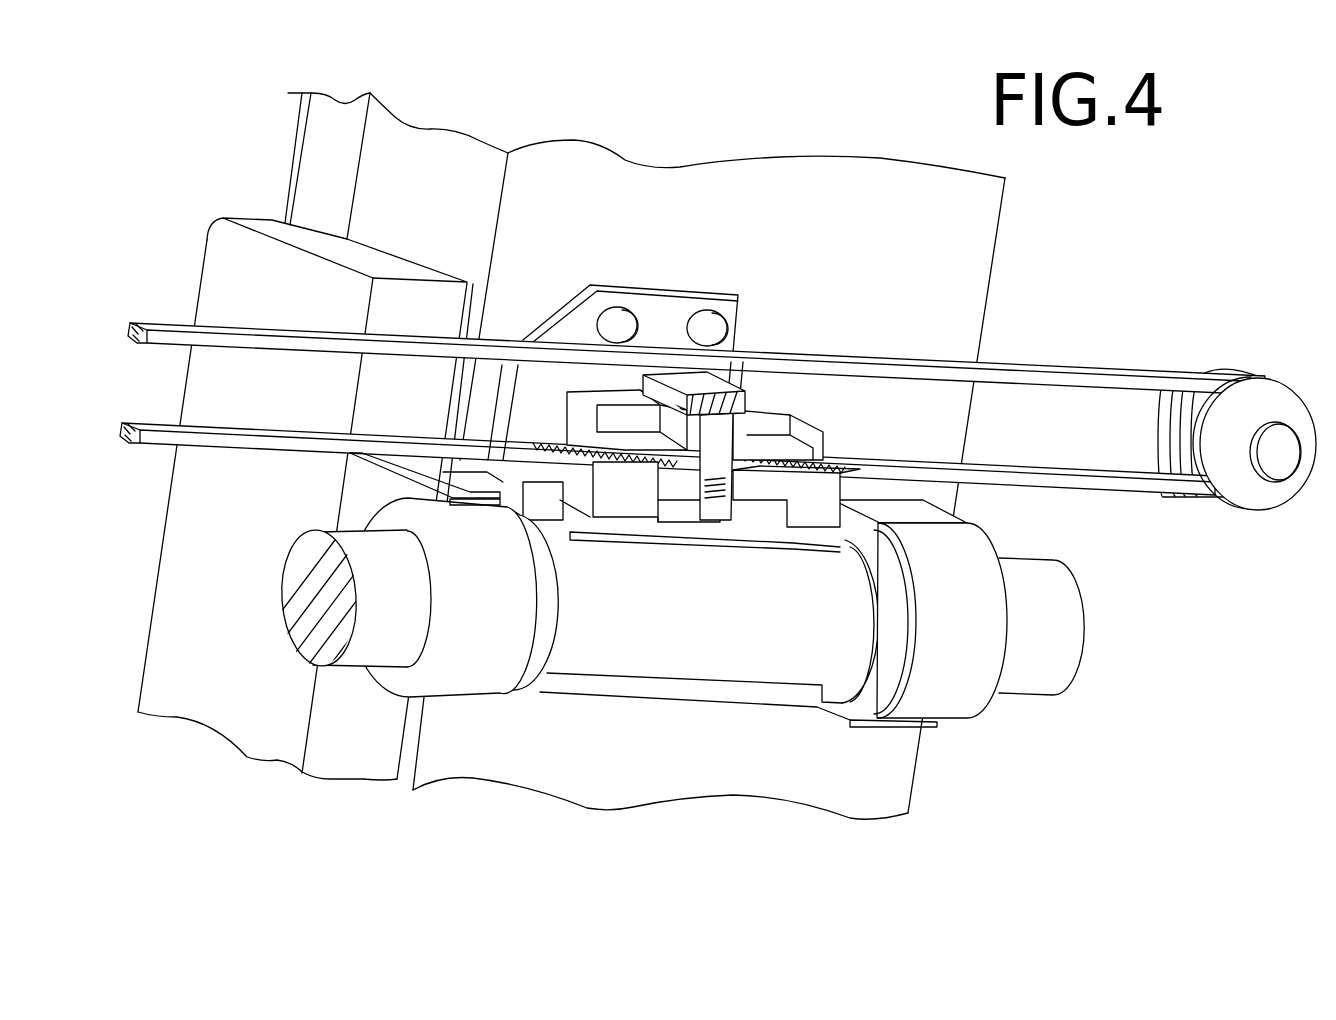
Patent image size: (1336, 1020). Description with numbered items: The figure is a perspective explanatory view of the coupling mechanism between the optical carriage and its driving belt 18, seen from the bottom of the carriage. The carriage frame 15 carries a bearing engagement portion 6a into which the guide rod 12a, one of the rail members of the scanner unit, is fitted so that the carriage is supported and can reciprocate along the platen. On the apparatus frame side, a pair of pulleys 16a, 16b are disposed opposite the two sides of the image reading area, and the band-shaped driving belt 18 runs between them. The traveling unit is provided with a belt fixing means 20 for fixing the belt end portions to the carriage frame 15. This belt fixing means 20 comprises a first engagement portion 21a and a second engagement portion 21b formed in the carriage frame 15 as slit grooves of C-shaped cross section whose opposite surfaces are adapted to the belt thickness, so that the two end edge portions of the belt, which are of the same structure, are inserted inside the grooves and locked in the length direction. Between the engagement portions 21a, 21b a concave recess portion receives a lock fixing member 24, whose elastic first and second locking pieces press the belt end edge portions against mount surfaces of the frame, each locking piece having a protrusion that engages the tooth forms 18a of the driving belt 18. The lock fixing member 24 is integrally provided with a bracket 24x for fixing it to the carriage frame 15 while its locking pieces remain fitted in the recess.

The bearing engagement portion 6a is at (480, 678).
The guide rod 12a is at (1027, 680).
The carriage frame 15 is at (968, 285).
The pulley 16a is at (1243, 407).
The pulley 16b is at (1210, 406).
The driving belt 18 is at (1107, 483).
The tooth forms 18a is at (828, 458).
The belt fixing means 20 is at (626, 361).
The first engagement portion 21a is at (590, 397).
The second engagement portion 21b is at (810, 427).
The lock fixing member 24 is at (732, 446).
The bracket 24x is at (655, 302).